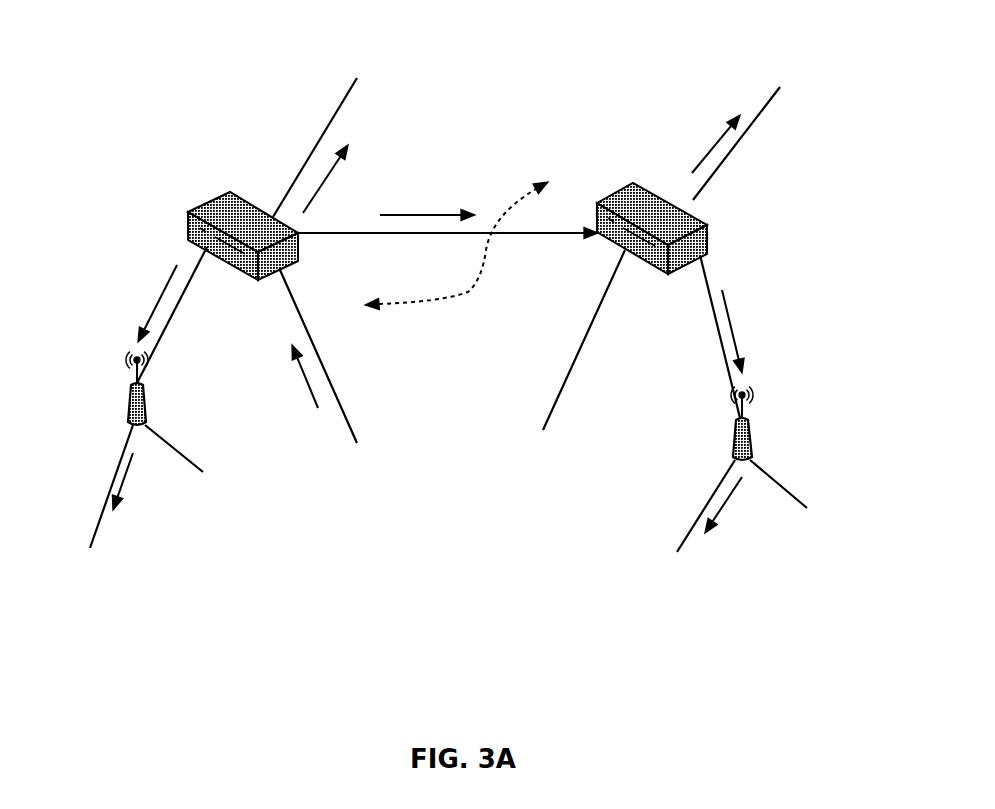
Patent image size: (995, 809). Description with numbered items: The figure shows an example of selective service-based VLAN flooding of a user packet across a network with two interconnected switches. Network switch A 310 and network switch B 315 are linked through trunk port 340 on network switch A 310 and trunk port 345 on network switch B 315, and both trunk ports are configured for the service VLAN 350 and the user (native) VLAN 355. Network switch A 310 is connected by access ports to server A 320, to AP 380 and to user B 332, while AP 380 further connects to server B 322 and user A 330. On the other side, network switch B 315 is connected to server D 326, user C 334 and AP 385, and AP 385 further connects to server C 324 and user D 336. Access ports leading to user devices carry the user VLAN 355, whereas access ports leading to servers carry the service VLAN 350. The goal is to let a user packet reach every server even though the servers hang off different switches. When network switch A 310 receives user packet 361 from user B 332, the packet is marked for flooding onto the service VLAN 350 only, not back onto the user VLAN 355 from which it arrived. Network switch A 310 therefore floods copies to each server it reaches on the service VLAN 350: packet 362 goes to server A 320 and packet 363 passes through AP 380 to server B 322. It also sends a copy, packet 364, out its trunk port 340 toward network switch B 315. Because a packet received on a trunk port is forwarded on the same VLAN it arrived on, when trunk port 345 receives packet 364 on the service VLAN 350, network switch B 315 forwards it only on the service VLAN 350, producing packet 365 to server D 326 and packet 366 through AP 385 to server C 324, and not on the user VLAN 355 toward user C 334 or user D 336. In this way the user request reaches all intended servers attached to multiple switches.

The network switch A 310 is at (243, 267).
The network switch B 315 is at (652, 259).
The server A 320 is at (337, 138).
The server B 322 is at (93, 520).
The server C 324 is at (690, 537).
The server D 326 is at (765, 117).
The user A 330 is at (185, 482).
The user B 332 is at (329, 388).
The user C 334 is at (575, 371).
The user D 336 is at (790, 517).
The trunk port 340 is at (432, 246).
The trunk port 345 is at (573, 193).
The service VLAN 350 is at (437, 308).
The user VLAN 355 is at (446, 372).
The user packet 361 is at (293, 376).
The packet 362 is at (336, 179).
The packet 363 is at (144, 387).
The user packet 364 is at (448, 214).
The packet 365 is at (705, 144).
The packet 366 is at (737, 411).
The AP 380 is at (139, 336).
The AP 385 is at (725, 358).